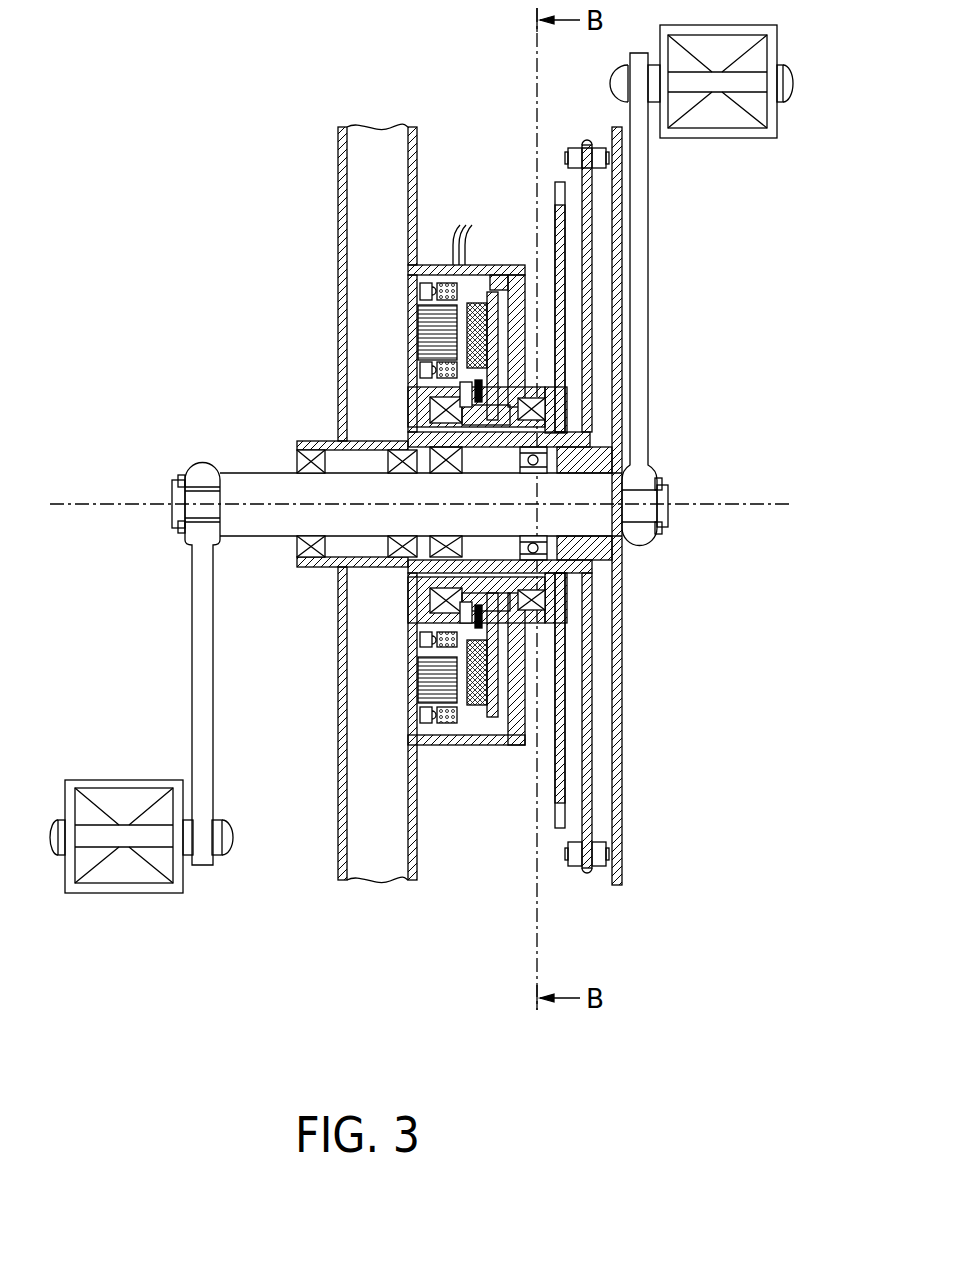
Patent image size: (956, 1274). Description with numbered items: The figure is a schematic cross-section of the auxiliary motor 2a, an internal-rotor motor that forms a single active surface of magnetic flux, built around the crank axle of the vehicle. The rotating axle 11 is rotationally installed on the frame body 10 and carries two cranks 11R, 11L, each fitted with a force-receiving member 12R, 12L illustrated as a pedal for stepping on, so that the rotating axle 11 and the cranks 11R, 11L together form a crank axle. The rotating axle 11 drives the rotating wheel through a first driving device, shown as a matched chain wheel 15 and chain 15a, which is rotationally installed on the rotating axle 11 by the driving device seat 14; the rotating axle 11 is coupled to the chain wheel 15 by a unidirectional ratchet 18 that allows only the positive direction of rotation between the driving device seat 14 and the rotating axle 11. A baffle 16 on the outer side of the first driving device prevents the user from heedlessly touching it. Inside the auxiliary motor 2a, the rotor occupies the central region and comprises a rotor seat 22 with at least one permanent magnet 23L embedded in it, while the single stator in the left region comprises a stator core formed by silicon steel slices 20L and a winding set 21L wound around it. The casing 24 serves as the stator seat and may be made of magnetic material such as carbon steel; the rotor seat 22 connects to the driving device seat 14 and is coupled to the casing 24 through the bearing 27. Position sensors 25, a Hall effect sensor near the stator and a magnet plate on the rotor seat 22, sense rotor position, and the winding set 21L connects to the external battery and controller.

The frame body 10 is at (360, 182).
The rotating axle 11 is at (241, 473).
The left crank 11L is at (203, 677).
The right crank 11R is at (640, 232).
The left force-receiving member 12L is at (112, 797).
The right force-receiving member 12R is at (726, 120).
The driving device seat 14 is at (588, 440).
The chain wheel 15 is at (583, 823).
The chain 15a is at (599, 868).
The baffle 16 is at (620, 598).
The unidirectional ratchet 18 is at (587, 548).
The silicon steel slices 20L is at (427, 323).
The winding set 21L is at (437, 291).
The rotor seat 22 is at (488, 728).
The permanent magnet 23L is at (470, 722).
The casing 24 is at (517, 265).
The position sensor 25 is at (462, 634).
The bearing 27 is at (540, 411).
The auxiliary motor 2a is at (478, 248).